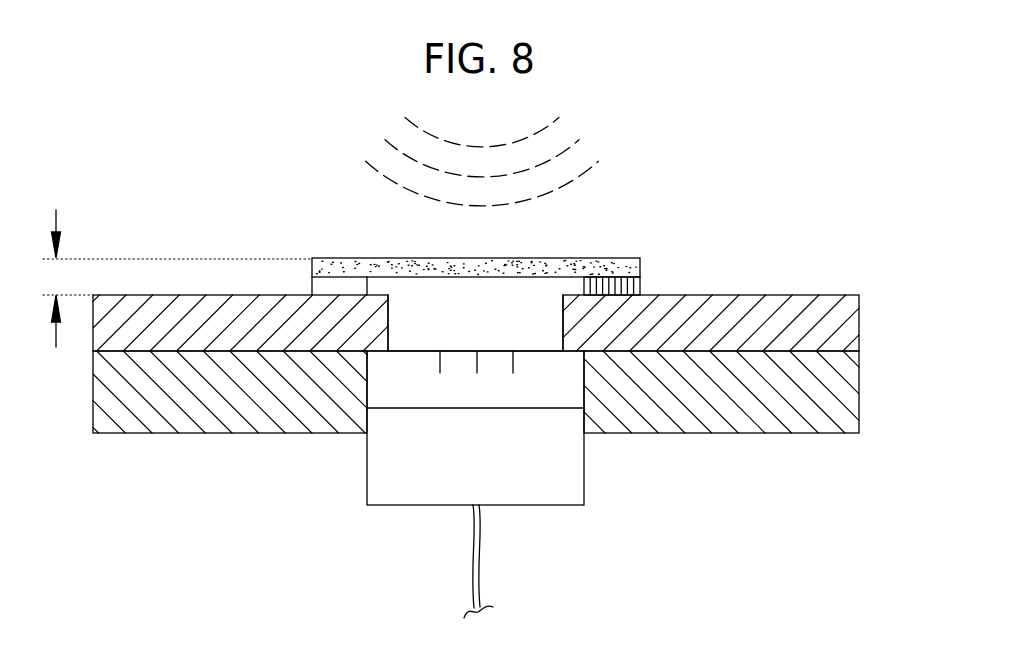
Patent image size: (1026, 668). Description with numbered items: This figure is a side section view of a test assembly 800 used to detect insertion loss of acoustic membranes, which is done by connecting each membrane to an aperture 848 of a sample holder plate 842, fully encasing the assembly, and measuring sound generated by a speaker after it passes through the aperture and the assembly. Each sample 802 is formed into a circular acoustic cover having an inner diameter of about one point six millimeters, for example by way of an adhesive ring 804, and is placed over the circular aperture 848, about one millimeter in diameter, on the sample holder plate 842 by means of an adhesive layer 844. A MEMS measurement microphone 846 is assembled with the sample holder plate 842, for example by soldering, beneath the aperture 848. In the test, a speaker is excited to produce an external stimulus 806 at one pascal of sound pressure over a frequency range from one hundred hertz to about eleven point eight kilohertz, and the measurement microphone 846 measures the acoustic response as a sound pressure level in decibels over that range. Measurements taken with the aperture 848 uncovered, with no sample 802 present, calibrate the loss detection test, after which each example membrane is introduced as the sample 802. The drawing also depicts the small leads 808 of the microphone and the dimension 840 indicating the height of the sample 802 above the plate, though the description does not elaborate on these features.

The test assembly 800 is at (745, 147).
The sample 802 is at (387, 263).
The adhesive ring 804 is at (634, 281).
The external stimulus 806 is at (582, 153).
The pins 808 is at (477, 350).
The height of sensor element above surface 840 is at (175, 265).
The sample holder plate 842 is at (733, 432).
The adhesive layer 844 is at (828, 296).
The measurement microphone 846 is at (563, 506).
The aperture 848 is at (532, 315).